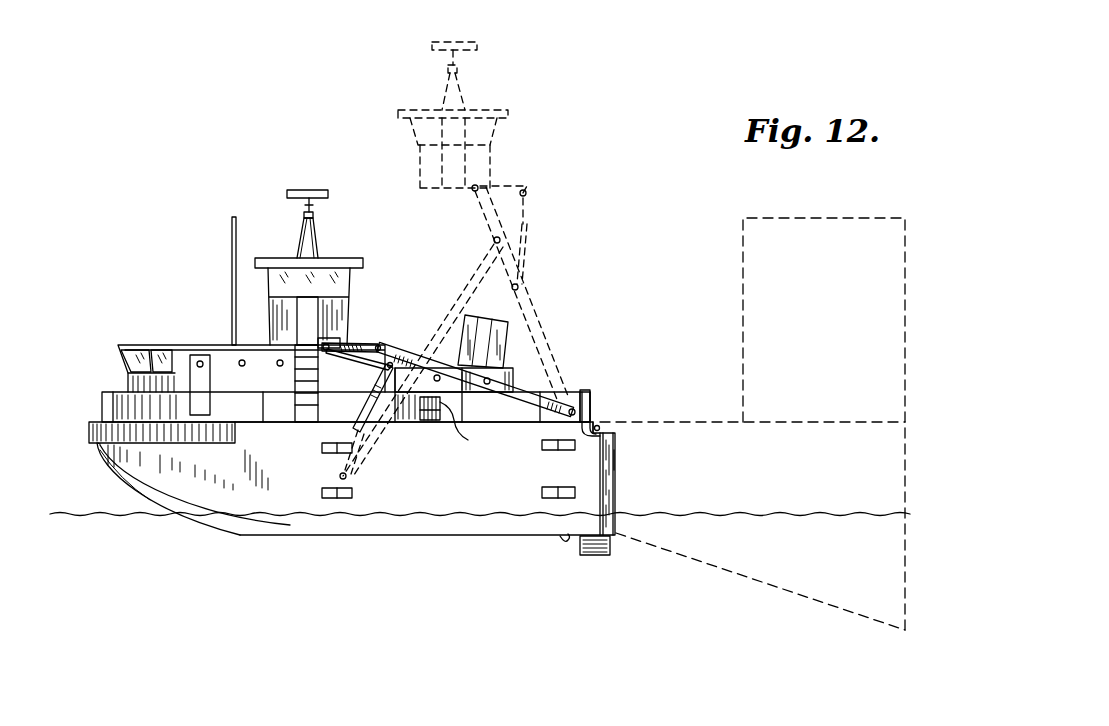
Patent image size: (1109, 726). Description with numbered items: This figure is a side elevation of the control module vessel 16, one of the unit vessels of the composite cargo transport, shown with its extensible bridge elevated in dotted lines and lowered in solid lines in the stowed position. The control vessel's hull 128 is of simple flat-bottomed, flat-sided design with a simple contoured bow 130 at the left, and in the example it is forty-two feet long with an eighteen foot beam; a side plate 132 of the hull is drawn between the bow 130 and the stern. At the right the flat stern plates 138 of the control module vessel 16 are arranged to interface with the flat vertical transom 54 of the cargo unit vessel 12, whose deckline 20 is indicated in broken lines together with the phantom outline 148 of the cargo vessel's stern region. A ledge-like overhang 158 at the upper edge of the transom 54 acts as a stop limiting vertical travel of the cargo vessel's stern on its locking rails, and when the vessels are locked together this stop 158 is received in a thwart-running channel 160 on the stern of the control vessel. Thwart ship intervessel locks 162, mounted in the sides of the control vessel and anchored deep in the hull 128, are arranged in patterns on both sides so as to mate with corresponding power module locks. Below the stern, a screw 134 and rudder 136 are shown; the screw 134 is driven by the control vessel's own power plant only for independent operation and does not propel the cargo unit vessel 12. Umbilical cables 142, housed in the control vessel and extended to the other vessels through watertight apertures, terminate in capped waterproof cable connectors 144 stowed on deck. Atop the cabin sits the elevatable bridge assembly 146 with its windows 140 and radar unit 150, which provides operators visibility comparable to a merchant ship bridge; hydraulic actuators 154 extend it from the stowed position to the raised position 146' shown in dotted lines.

The control module vessel 16 is at (165, 256).
The radar unit 150 is at (302, 192).
The elevatable bridge assembly 146 is at (415, 314).
The pilothouse in raised position 146' is at (473, 260).
The barge 148 is at (743, 258).
The cargo unit vessel 12 is at (684, 413).
The deckline 20 is at (760, 422).
The thwart-running channel 160 is at (584, 392).
The ledge-like overhang 158 is at (600, 427).
The transom 54 is at (615, 457).
The stern plates 138 is at (615, 482).
The rudder 136 is at (609, 554).
The screw 134 is at (567, 540).
The contoured bow 130 is at (112, 478).
The wheelhouse windows 140 is at (130, 357).
The hydraulic actuators 154 is at (362, 405).
The thwart ship intervessel locks 162 is at (327, 456).
The umbilical cables 142 is at (431, 418).
The cable connectors 144 is at (443, 407).
The hull 132 is at (407, 513).
The hull 128 is at (372, 496).